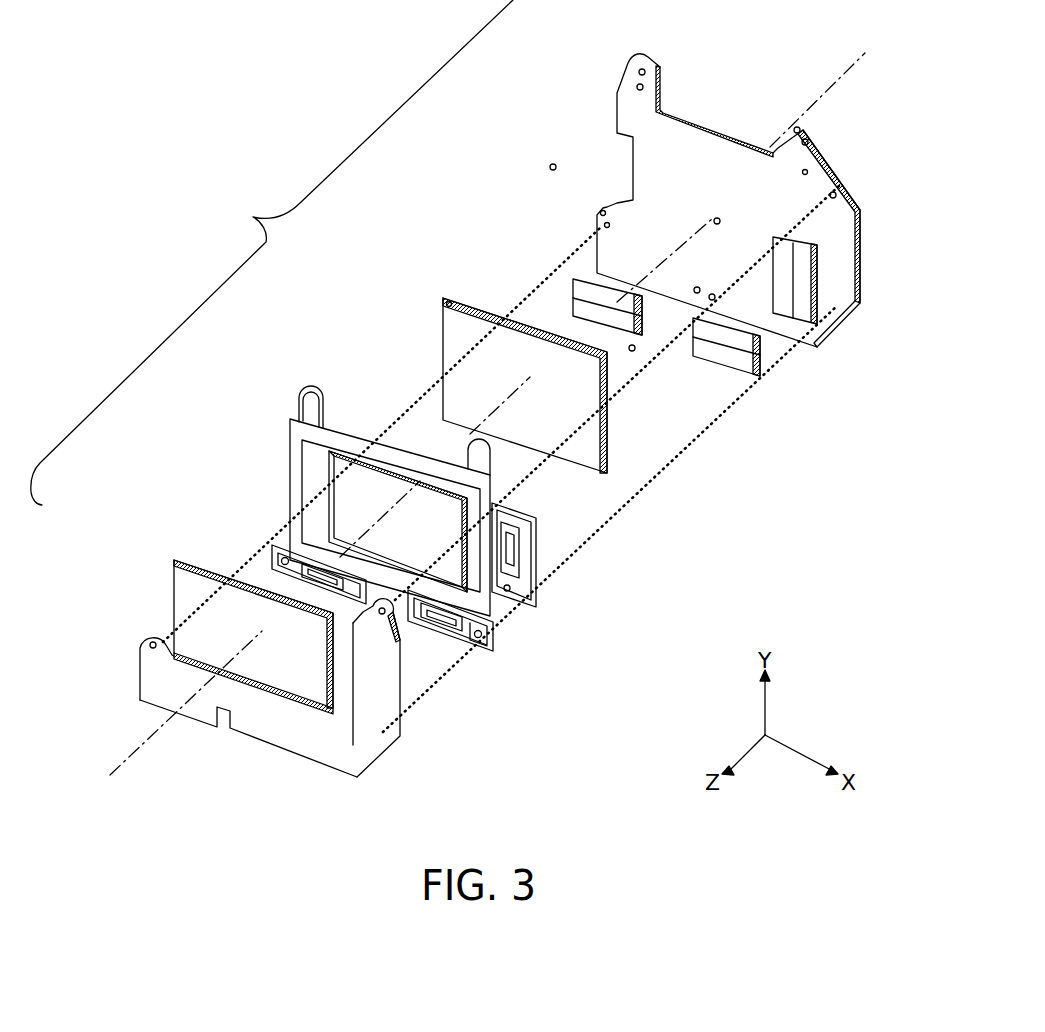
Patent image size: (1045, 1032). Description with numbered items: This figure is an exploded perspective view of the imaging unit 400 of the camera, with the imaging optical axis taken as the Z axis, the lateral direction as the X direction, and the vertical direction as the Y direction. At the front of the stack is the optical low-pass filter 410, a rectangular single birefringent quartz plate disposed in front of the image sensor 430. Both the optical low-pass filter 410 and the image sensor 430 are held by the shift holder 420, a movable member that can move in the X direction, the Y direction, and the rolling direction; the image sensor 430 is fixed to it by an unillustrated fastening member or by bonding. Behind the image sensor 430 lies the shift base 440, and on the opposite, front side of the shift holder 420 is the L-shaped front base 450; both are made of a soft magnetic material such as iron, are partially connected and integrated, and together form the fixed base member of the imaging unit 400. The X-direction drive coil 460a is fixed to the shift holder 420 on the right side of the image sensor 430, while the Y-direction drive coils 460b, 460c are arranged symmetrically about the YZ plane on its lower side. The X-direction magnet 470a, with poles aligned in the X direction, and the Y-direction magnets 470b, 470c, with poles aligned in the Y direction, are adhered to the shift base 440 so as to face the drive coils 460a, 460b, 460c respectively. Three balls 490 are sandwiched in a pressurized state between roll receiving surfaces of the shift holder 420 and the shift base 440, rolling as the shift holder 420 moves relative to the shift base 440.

The imaging unit 400 is at (272, 252).
The optical low-pass filter 410 is at (190, 592).
The shift holder 420 is at (297, 431).
The image sensor 430 is at (453, 323).
The shift base 440 is at (627, 100).
The front base 450 is at (213, 712).
The X-direction drive coil 460a is at (518, 542).
The Y-direction drive coil 460b is at (299, 562).
The Y-direction drive coil 460c is at (440, 623).
The X-direction magnet 470a is at (806, 262).
The Y-direction magnet 470b is at (575, 282).
The Y-direction magnet 470c is at (762, 378).
The ball 490 is at (551, 167).